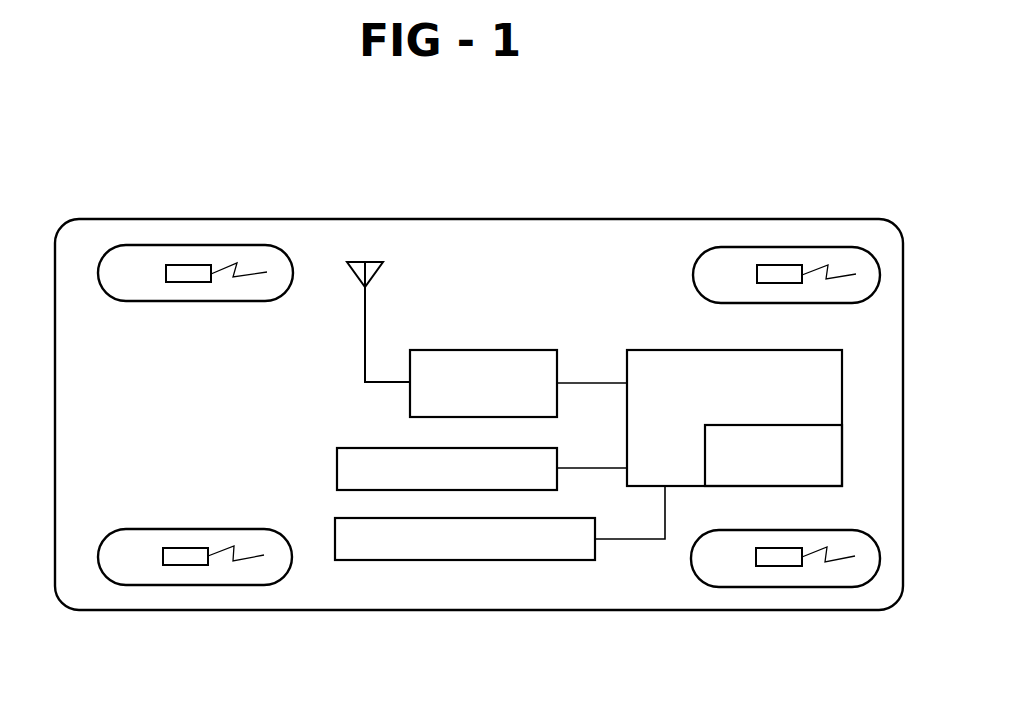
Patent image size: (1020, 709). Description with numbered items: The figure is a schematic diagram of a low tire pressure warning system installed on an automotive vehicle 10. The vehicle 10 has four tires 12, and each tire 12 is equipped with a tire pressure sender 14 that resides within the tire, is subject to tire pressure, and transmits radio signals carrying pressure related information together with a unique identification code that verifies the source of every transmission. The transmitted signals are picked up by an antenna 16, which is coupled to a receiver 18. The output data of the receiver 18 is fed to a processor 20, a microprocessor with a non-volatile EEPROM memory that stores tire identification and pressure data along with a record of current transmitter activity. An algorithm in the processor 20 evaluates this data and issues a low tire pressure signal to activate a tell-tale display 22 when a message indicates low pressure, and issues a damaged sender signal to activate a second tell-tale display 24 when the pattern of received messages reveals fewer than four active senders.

The automotive vehicle 10 is at (518, 218).
The tire 12 is at (153, 245).
The tire pressure sender 14 is at (193, 265).
The antenna 16 is at (373, 262).
The receiver 18 is at (475, 350).
The processor 20 is at (676, 350).
The tell-tale display 22 is at (348, 448).
The tell-tale display 24 is at (407, 560).